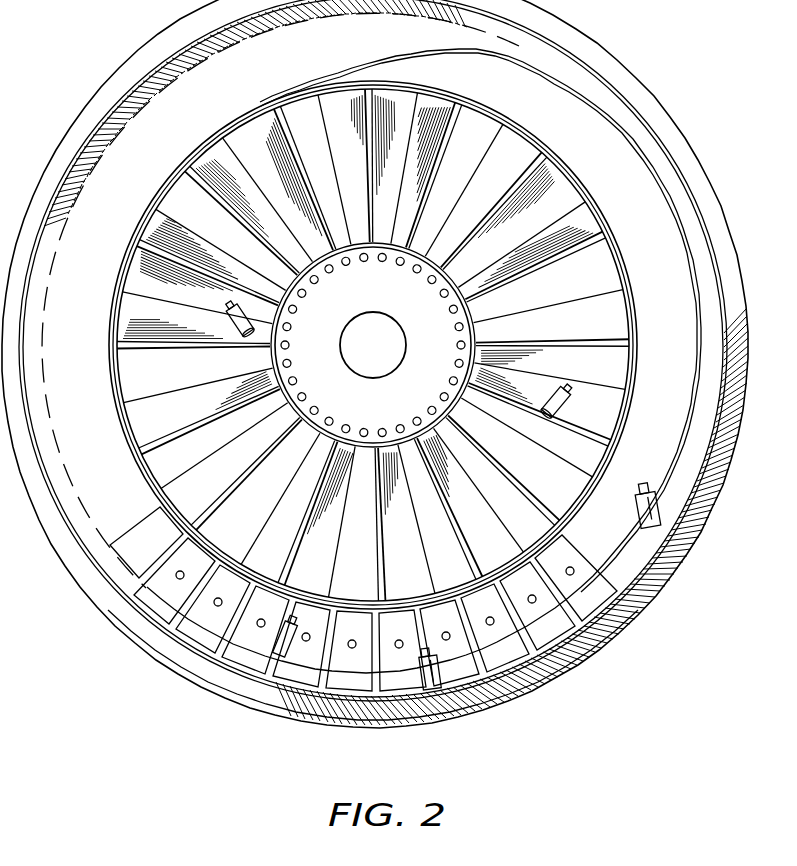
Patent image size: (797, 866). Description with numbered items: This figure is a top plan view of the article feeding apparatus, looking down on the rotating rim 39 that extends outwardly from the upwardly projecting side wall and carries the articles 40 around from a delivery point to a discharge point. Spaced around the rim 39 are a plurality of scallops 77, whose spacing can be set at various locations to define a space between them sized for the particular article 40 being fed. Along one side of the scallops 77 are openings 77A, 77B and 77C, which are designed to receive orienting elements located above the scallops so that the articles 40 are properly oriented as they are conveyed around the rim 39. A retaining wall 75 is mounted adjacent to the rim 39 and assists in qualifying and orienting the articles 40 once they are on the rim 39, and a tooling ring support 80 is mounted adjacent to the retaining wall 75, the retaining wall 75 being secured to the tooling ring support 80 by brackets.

The rim 39 is at (609, 572).
The article 40 is at (578, 404).
The retaining wall 75 is at (672, 500).
The scallops 77 is at (340, 641).
The opening 77A is at (158, 632).
The opening 77B is at (222, 650).
The opening 77C is at (268, 668).
The tooling ring support 80 is at (655, 576).